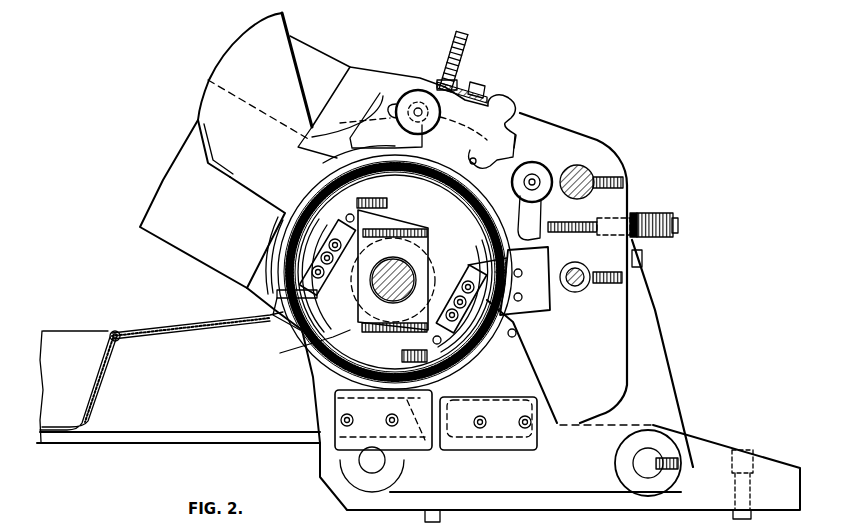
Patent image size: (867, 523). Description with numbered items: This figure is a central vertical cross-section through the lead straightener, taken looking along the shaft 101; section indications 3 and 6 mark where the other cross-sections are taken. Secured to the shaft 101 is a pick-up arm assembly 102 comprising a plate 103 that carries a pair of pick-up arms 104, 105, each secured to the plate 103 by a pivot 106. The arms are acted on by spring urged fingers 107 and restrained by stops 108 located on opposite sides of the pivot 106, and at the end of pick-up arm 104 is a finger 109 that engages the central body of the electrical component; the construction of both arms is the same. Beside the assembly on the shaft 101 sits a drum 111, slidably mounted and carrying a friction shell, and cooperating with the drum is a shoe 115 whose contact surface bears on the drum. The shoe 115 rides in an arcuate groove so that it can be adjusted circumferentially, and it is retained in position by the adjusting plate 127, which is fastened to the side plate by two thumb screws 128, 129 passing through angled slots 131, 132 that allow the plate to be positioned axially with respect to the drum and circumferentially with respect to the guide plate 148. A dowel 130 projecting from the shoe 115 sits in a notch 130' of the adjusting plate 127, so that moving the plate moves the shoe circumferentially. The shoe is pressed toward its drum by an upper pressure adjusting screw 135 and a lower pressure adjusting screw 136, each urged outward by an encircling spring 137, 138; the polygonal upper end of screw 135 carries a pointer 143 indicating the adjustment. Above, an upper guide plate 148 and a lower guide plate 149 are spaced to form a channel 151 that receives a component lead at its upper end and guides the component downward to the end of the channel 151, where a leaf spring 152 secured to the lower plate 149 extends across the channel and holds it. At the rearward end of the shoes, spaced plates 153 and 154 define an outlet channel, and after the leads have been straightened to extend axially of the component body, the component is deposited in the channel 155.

The section line 3- 3 is at (431, 150).
The section line 6- 6 is at (472, 33).
The shaft 101 is at (410, 272).
The pick-up arm assembly 102 is at (428, 250).
The plate 103 is at (387, 203).
The pick-up arm 104 is at (486, 300).
The pick-up arm 105 is at (325, 247).
The pivot 106 is at (345, 218).
The spring urged finger 107 is at (366, 232).
The stop 108 is at (370, 198).
The finger 109 is at (263, 277).
The drum 111 is at (297, 355).
The shoe 115 is at (383, 142).
The adjusting plate 127 is at (518, 106).
The thumb screw 128 is at (545, 163).
The thumb screw 129 is at (407, 92).
The dowel 130 is at (477, 142).
The notch 130' is at (536, 186).
The angled slot 131 is at (550, 219).
The angled slot 132 is at (397, 108).
The upper pressure adjusting screw 135 is at (468, 69).
The lower pressure adjusting screw 136 is at (672, 212).
The spring 137 is at (460, 80).
The spring 138 is at (640, 212).
The pointer 143 is at (488, 93).
The upper guide plate 148 is at (262, 156).
The lower guide plate 149 is at (222, 224).
The channel 151 is at (232, 150).
The leaf spring 152 is at (277, 247).
The plate 153 is at (467, 387).
The plate 154 is at (530, 395).
The channel 155 is at (497, 377).